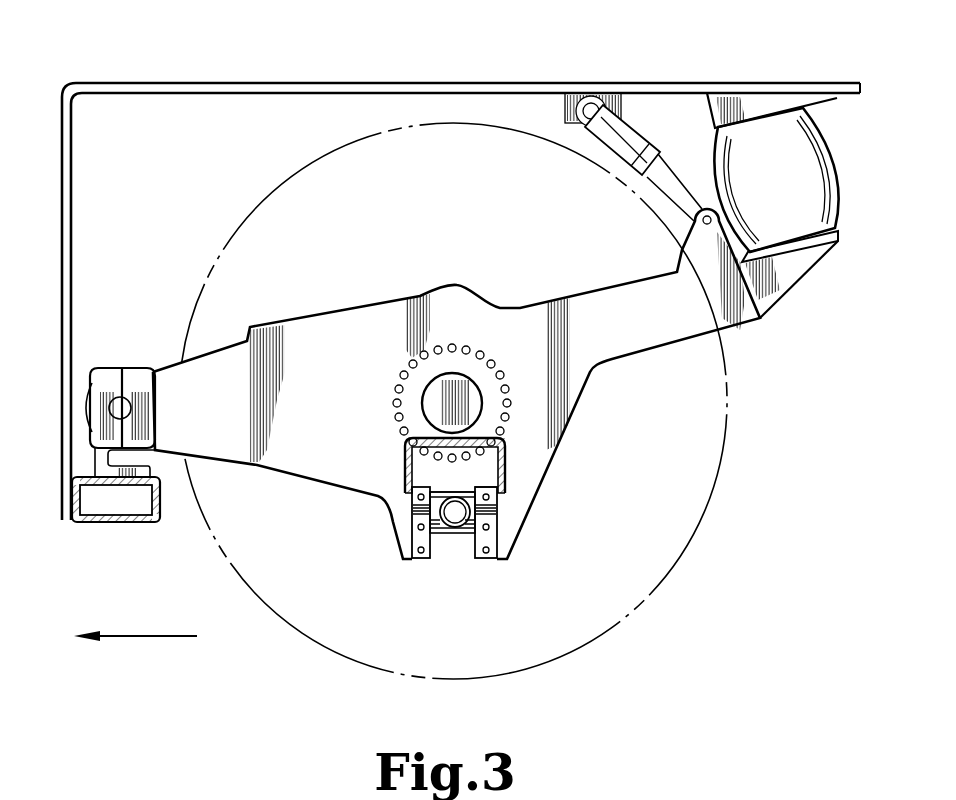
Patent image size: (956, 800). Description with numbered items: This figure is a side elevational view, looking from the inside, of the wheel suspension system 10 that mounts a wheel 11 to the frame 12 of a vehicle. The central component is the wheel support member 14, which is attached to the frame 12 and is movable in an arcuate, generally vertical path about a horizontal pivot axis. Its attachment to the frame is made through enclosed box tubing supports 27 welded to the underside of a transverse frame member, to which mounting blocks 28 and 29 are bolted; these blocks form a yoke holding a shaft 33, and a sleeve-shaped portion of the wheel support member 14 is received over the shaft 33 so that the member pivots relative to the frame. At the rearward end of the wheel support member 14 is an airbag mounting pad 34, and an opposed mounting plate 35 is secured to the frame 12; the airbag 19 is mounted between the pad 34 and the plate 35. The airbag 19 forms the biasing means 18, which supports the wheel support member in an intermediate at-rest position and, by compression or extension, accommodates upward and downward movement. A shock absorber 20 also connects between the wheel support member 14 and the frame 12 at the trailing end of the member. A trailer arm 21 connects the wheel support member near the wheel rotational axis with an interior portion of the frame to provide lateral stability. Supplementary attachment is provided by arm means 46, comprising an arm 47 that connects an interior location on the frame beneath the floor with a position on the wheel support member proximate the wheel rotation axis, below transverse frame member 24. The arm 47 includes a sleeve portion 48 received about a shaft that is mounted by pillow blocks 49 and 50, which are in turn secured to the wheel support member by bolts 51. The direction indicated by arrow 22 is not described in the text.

The wheel suspension system 10 is at (706, 534).
The wheel 11 is at (292, 625).
The frame 12 is at (330, 80).
The wheel support member 14 is at (272, 462).
The biasing means 18 is at (846, 200).
The airbag 19 is at (824, 160).
The shock absorber 20 is at (648, 153).
The trailer arm 21 is at (460, 532).
The direction of movement 22 is at (150, 638).
The transverse frame member 24 is at (404, 455).
The box tubing supports 27 is at (124, 523).
The mounting block 28 is at (108, 374).
The mounting block 29 is at (137, 374).
The shaft 33 is at (133, 412).
The airbag mounting pad 34 is at (830, 241).
The mounting plate 35 is at (772, 102).
The arm means 46 is at (489, 578).
The arm 47 is at (446, 552).
The sleeve portion 48 is at (458, 500).
The pillow block 49 is at (412, 518).
The pillow block 50 is at (498, 514).
The bolts 51 is at (492, 501).